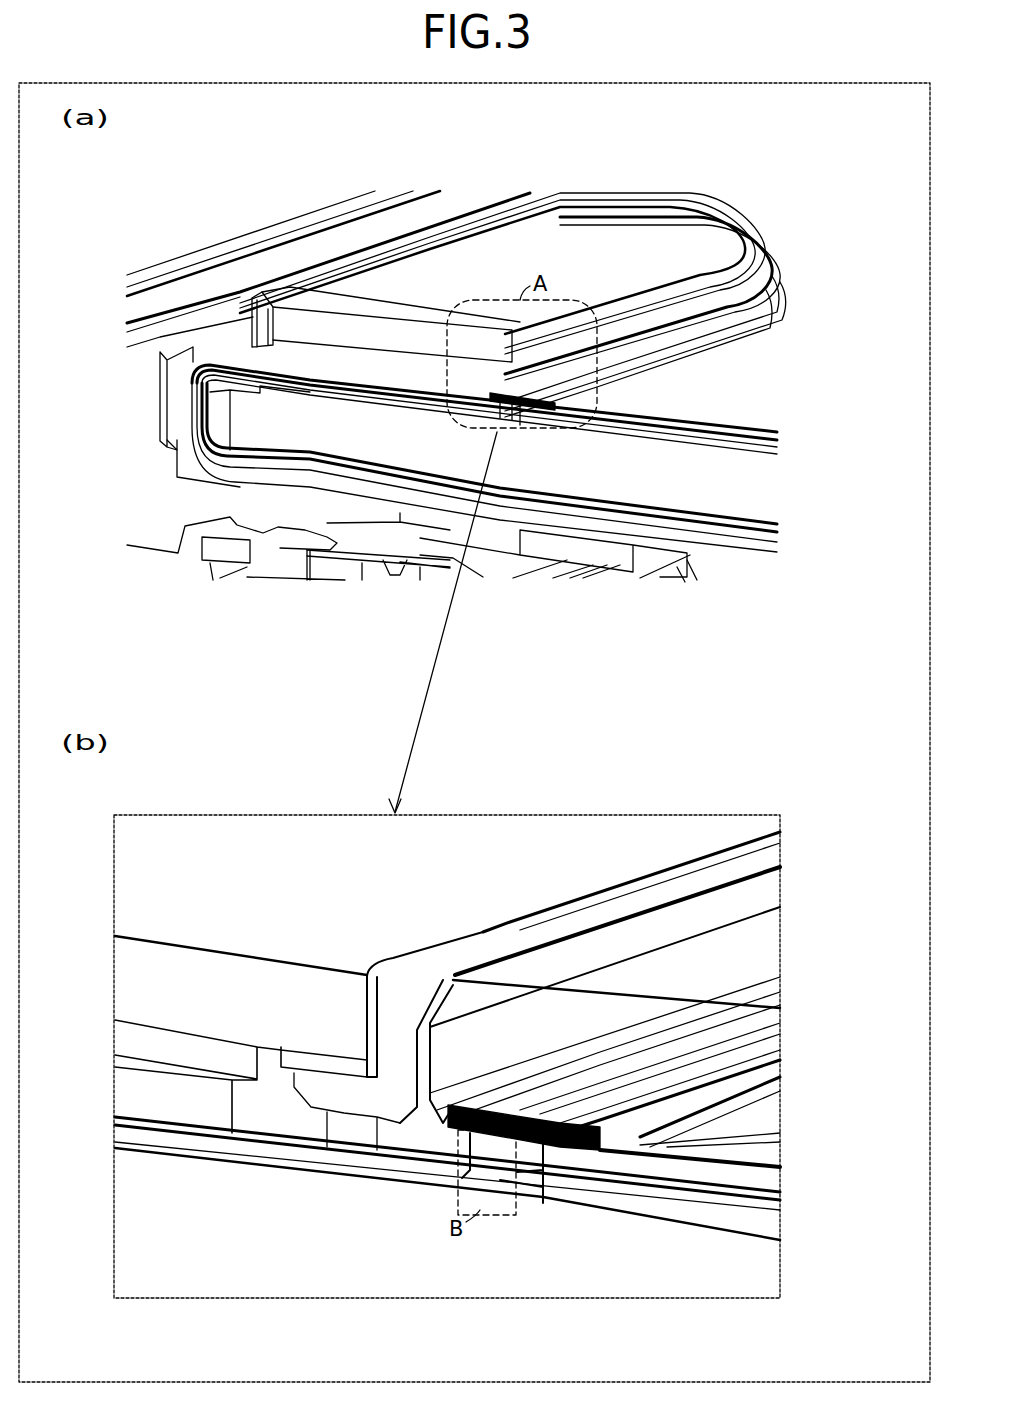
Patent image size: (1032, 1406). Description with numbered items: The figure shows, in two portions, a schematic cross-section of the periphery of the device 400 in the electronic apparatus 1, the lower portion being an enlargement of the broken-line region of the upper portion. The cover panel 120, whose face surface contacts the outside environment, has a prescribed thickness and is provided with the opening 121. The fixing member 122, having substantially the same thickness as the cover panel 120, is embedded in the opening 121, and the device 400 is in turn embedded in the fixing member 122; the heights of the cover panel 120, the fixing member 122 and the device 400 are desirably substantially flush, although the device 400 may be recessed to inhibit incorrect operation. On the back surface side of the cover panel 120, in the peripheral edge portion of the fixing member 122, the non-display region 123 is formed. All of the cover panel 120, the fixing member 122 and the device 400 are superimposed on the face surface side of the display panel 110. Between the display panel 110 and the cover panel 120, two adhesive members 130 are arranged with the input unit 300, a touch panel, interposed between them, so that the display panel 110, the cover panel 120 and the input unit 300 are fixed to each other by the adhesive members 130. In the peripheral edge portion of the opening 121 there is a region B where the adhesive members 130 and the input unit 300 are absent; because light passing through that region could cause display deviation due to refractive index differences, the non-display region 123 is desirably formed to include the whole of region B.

The electronic apparatus 1 is at (767, 149).
The display panel 110 is at (768, 496).
The cover panel 120 is at (777, 402).
The opening 121 is at (768, 222).
The fixing member 122 is at (772, 252).
The non-display region 123 is at (655, 392).
The adhesive members 130 is at (777, 438).
The input unit 300 is at (778, 447).
The device 400 is at (598, 240).